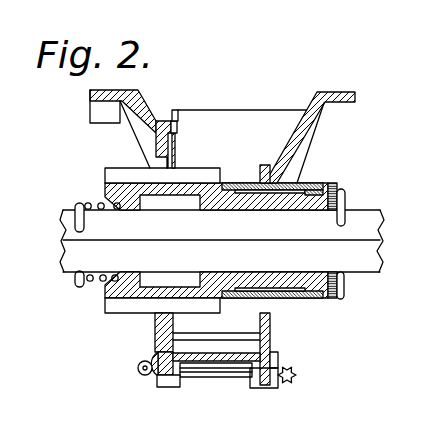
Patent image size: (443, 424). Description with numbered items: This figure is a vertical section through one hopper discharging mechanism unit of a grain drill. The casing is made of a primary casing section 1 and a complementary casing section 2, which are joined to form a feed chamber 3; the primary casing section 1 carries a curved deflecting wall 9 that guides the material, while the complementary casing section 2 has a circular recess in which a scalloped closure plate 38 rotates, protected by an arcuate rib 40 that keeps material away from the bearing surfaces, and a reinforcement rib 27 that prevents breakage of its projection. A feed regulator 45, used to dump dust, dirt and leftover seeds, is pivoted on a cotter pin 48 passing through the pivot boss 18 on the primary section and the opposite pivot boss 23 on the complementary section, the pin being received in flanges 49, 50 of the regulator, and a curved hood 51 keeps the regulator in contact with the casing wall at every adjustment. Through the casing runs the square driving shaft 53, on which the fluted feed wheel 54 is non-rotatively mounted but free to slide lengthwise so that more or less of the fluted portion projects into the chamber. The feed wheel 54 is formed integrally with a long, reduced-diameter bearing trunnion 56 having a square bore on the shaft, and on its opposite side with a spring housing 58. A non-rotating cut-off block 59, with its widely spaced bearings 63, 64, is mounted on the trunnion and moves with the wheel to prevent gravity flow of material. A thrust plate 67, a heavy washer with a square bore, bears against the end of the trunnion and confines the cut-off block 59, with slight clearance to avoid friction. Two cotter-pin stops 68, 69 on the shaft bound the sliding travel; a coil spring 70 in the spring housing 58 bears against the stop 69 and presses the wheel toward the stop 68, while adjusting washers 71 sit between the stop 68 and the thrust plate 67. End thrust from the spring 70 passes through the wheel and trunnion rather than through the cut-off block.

The primary casing section 1 is at (318, 136).
The complementary casing section 2 is at (128, 136).
The feed chamber 3 is at (169, 221).
The curved deflecting wall 9 is at (288, 150).
The pivot boss 18 is at (287, 379).
The pivot boss 23 is at (160, 380).
The reinforcement rib 27 is at (155, 340).
The scalloped closure plate 38 is at (178, 138).
The arcuate rib 40 is at (176, 140).
The feed regulator 45 is at (265, 343).
The cotter pin 48 is at (138, 370).
The flange 49 is at (192, 378).
The flange 50 is at (247, 378).
The hood 51 is at (157, 352).
The driving shaft 53 is at (62, 257).
The feed wheel 54 is at (106, 192).
The bearing trunnion 56 is at (240, 183).
The spring housing 58 is at (115, 283).
The cut-off block 59 is at (314, 183).
The bearing 63 is at (311, 300).
The bearing 64 is at (232, 302).
The thrust plate 67 is at (333, 189).
The stop 68 is at (345, 206).
The stop 69 is at (75, 218).
The coil spring 70 is at (97, 203).
The adjusting washer 71 is at (338, 301).